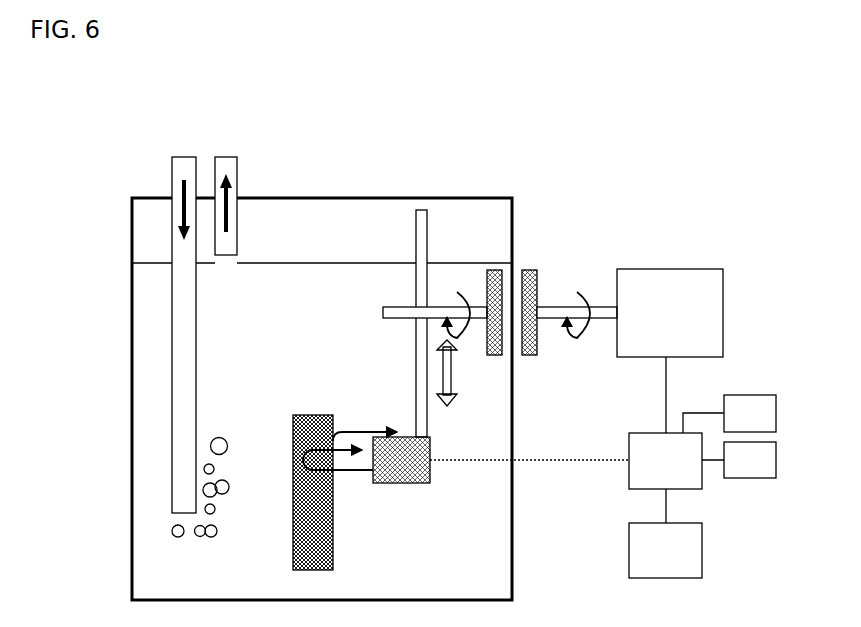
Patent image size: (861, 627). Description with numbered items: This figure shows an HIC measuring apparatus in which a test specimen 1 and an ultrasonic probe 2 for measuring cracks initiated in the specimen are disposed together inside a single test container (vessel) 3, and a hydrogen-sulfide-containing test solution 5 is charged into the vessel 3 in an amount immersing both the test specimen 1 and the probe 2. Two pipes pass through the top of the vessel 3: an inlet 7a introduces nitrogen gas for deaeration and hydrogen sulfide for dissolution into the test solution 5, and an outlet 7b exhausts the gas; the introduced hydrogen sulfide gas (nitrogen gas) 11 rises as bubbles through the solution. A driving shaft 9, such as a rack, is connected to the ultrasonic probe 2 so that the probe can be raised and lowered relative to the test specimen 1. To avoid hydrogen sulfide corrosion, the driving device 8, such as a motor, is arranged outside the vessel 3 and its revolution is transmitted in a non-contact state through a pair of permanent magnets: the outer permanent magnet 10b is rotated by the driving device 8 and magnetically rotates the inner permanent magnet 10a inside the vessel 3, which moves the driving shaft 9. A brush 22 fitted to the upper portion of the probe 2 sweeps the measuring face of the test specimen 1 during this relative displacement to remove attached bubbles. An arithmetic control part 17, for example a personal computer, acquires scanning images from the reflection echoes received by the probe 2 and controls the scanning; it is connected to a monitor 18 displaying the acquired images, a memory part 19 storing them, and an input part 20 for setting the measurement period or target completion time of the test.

The test specimen 1 is at (312, 415).
The ultrasonic probe 2 is at (400, 483).
The test container (vessel) 3 is at (514, 503).
The test solution 5 is at (261, 333).
The inlet 7a is at (184, 157).
The outlet 7b is at (228, 157).
The driving device 8 is at (666, 269).
The driving shaft 9 is at (428, 232).
The permanent magnet (inner) 10a is at (496, 356).
The permanent magnet (outer) 10b is at (530, 356).
The hydrogen sulfide gas (nitrogen gas) 11 is at (172, 528).
The arithmetic control part 17 is at (677, 471).
The monitor 18 is at (692, 558).
The memory part 19 is at (762, 457).
The input part 20 is at (752, 395).
The brush 22 is at (374, 432).